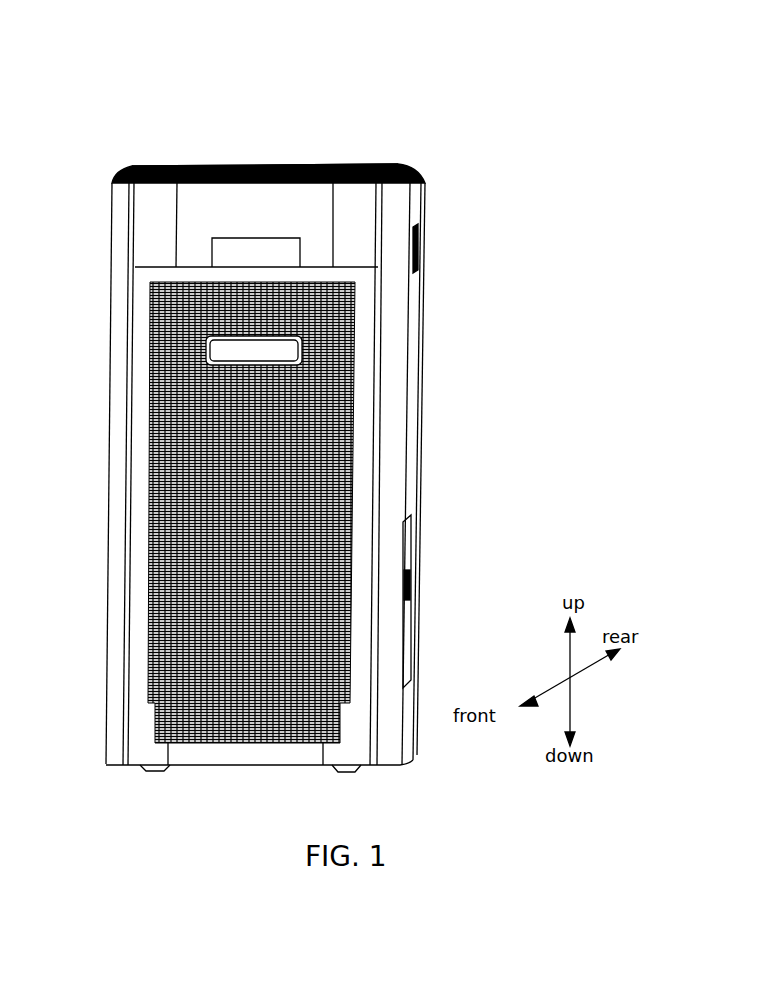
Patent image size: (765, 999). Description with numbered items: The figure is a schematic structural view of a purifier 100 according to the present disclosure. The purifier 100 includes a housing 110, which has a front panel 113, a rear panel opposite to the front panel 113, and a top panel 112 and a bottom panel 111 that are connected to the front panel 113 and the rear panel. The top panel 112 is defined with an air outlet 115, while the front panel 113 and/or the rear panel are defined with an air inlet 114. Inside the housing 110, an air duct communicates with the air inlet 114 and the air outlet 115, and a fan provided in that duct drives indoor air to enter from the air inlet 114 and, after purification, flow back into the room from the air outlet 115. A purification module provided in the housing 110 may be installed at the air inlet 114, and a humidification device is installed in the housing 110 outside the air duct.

The purifier 100 is at (302, 48).
The housing 110 is at (412, 385).
The bottom panel 111 is at (416, 758).
The top panel 112 is at (426, 180).
The front panel 113 is at (135, 535).
The air inlet 114 is at (152, 372).
The air outlet 115 is at (294, 165).